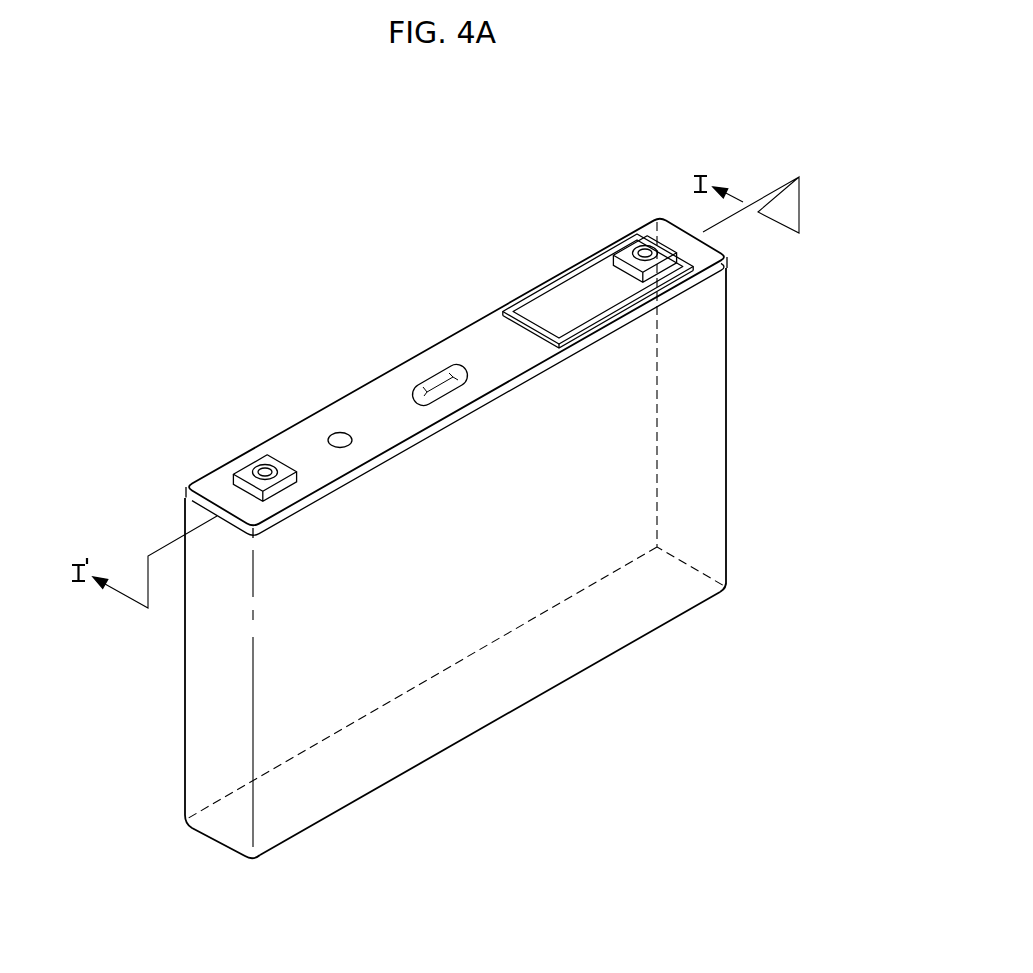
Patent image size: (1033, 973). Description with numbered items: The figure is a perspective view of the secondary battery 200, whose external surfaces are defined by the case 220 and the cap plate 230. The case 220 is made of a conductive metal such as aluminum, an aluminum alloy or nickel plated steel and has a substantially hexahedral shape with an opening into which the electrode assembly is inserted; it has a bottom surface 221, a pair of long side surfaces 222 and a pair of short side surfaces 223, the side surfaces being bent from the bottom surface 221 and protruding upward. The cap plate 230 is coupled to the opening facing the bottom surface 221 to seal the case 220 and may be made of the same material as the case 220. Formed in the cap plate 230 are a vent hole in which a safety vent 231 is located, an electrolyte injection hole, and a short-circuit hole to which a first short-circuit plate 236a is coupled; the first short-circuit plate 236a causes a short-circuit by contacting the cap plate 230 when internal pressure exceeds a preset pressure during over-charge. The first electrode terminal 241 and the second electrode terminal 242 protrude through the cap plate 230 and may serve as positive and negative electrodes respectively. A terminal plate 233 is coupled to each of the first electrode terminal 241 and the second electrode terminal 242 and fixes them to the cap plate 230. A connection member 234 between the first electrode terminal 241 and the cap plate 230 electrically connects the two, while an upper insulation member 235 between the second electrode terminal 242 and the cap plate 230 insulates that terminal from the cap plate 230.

The secondary battery 200 is at (408, 200).
The case 220 is at (360, 916).
The bottom surface 221 is at (490, 727).
The long side surfaces 222 is at (498, 612).
The short side surfaces 223 is at (726, 512).
The cap plate 230 is at (345, 407).
The safety vent 231 is at (427, 375).
The terminal plate 233 is at (242, 475).
The connection member 234 is at (223, 489).
The upper insulation member 235 is at (535, 293).
The first short-circuit plate 236a is at (575, 298).
The first electrode terminal 241 is at (267, 467).
The second electrode terminal 242 is at (642, 247).